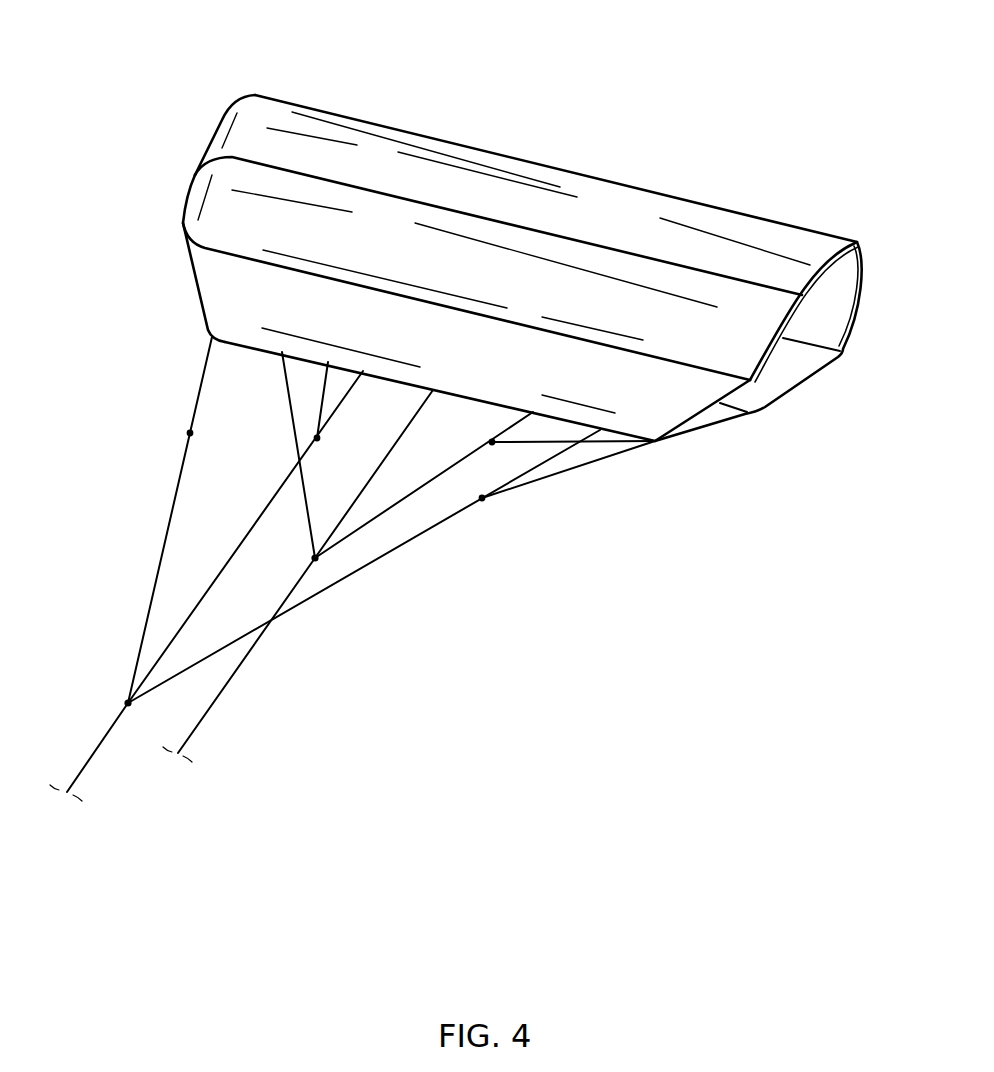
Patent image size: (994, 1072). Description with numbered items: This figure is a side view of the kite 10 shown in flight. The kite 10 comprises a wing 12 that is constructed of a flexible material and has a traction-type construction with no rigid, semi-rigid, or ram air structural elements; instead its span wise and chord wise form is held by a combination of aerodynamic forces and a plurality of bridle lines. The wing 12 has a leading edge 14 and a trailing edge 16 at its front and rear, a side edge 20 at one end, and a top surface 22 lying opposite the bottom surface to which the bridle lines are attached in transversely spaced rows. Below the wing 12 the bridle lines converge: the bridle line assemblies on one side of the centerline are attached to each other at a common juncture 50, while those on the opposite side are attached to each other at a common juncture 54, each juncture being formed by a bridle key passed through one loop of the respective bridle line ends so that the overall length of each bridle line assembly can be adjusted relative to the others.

The kite 10 is at (711, 99).
The wing 12 is at (818, 228).
The leading edge 14 is at (194, 174).
The trailing edge 16 is at (861, 298).
The side edge 20 is at (662, 425).
The top surface 22 is at (375, 137).
The common juncture 50 is at (316, 559).
The common juncture 54 is at (128, 703).